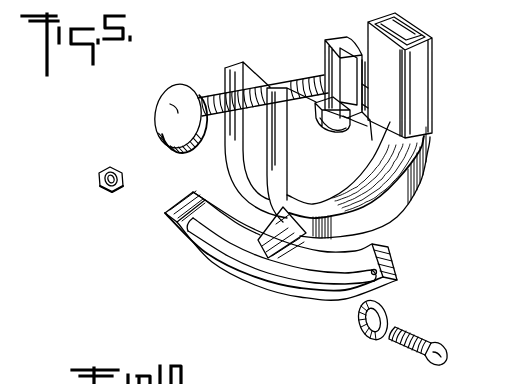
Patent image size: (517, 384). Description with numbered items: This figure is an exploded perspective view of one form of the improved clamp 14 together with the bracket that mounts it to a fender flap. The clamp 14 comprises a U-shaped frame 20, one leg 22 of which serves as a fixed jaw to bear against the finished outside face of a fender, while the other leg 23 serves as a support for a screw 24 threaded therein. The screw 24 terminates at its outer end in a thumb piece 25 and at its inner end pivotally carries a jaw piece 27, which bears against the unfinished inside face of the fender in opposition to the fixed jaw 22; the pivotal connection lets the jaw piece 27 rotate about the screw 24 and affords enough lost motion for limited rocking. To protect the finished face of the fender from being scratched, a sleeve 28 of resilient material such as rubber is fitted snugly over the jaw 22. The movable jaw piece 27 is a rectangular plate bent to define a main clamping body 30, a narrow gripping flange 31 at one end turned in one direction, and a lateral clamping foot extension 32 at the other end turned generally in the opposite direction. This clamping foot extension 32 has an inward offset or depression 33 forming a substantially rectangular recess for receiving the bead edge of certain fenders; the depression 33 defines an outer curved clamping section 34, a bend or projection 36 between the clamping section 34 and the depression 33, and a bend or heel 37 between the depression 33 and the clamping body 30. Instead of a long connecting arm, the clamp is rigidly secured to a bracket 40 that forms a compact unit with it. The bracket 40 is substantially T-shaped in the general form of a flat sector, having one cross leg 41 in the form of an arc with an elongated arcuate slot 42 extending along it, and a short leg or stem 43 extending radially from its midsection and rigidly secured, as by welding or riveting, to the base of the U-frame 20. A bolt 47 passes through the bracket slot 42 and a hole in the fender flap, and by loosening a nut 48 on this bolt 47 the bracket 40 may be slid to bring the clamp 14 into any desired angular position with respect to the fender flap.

The clamp 14 is at (427, 152).
The U-shaped frame 20 is at (395, 214).
The leg 22 is at (397, 31).
The leg 23 is at (231, 62).
The screw 24 is at (206, 92).
The thumb piece 25 is at (175, 106).
The jaw piece 27 is at (325, 58).
The sleeve 28 is at (438, 64).
The main clamping body 30 is at (362, 88).
The gripping flange 31 is at (343, 38).
The clamping foot extension 32 is at (325, 122).
The depression 33 is at (370, 122).
The clamping section 34 is at (328, 138).
The projection 36 is at (348, 128).
The heel 37 is at (363, 110).
The bracket 40 is at (209, 275).
The cross leg 41 is at (180, 246).
The arcuate slot 42 is at (422, 258).
The stem 43 is at (273, 233).
The bolt 47 is at (447, 350).
The nut 48 is at (98, 182).